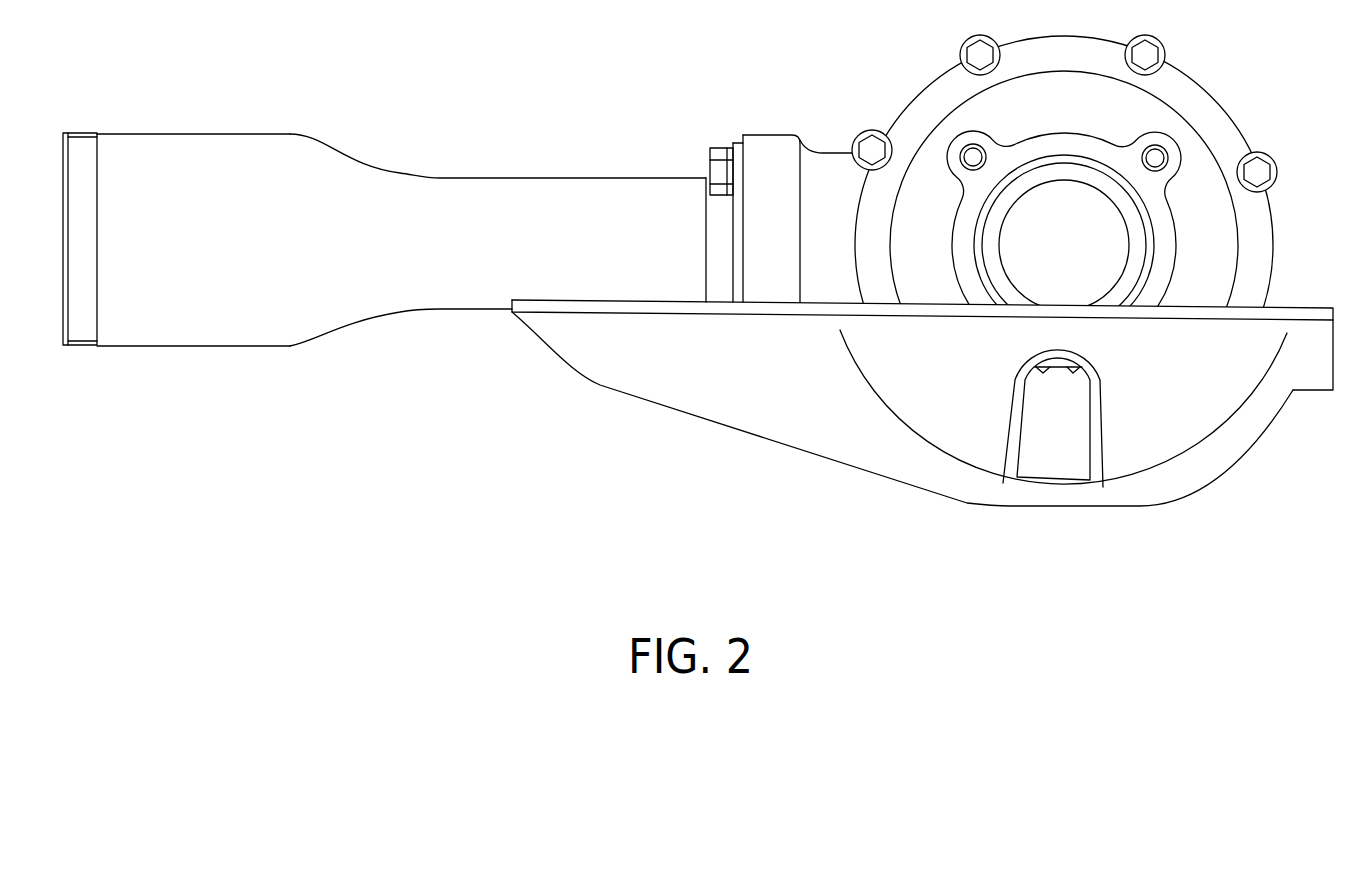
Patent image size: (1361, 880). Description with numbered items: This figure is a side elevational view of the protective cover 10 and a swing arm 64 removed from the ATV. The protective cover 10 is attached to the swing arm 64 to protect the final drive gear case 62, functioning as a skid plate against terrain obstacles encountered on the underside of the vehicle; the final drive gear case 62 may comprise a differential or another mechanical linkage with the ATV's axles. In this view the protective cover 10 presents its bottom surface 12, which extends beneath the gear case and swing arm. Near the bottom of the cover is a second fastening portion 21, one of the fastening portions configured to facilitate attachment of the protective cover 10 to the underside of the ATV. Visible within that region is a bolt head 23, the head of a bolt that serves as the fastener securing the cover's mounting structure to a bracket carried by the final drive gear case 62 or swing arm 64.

The protective cover 10 is at (547, 399).
The bottom surface 12 is at (707, 412).
The second fastening portion 21 is at (1058, 462).
The bolt head 23 is at (1060, 368).
The final drive gear case 62 is at (1227, 113).
The swing arm 64 is at (232, 338).